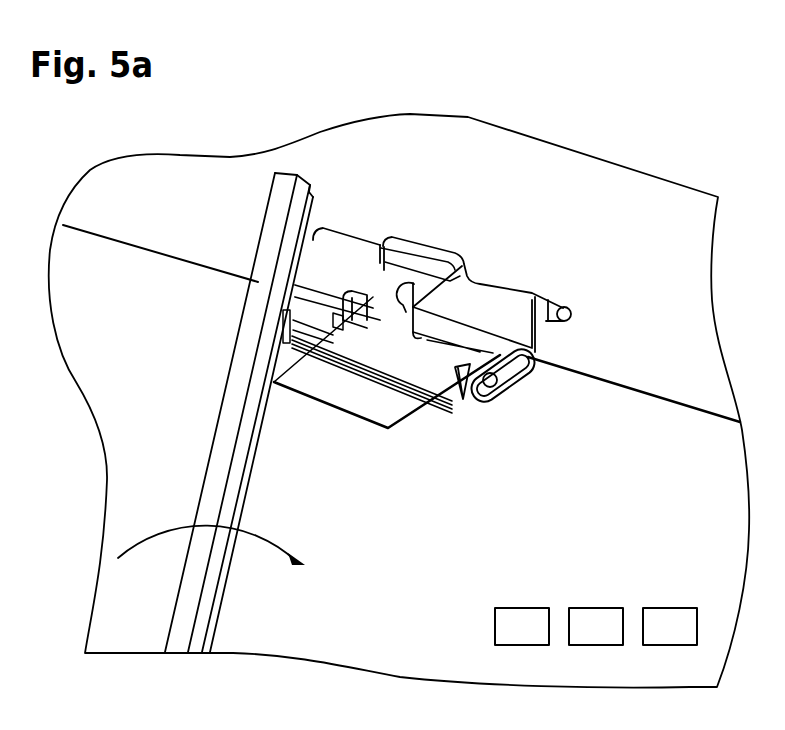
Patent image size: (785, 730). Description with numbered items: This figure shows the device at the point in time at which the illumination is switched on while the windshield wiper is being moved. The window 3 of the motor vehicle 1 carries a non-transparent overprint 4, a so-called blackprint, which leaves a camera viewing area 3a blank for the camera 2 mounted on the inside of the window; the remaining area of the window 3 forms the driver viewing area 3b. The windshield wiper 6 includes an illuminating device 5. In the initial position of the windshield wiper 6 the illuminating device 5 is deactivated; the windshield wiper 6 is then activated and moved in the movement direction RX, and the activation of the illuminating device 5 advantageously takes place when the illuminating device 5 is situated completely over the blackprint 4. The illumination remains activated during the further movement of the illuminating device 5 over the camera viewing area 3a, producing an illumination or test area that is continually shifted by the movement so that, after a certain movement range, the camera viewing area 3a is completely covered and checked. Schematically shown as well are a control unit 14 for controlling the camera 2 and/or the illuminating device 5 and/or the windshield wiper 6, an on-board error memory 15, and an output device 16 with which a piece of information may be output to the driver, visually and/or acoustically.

The motor vehicle 1 is at (685, 139).
The camera 2 is at (435, 281).
The window 3 is at (438, 436).
The camera viewing area 3a is at (378, 385).
The driver viewing area 3b is at (506, 453).
The non-transparent overprint 4 is at (249, 202).
The illuminating device 5 is at (315, 257).
The windshield wiper 6 is at (217, 436).
The control unit 14 is at (518, 658).
The on-board error memory 15 is at (593, 658).
The output device 16 is at (666, 660).
The movement direction RX is at (272, 574).